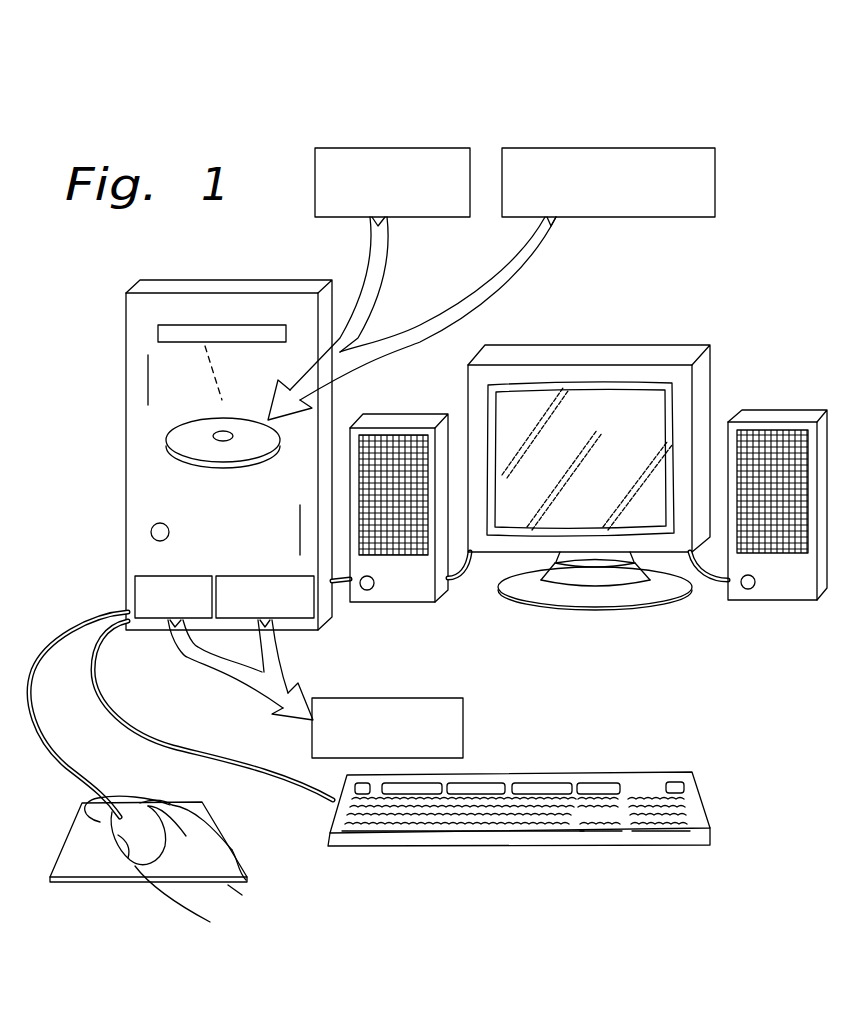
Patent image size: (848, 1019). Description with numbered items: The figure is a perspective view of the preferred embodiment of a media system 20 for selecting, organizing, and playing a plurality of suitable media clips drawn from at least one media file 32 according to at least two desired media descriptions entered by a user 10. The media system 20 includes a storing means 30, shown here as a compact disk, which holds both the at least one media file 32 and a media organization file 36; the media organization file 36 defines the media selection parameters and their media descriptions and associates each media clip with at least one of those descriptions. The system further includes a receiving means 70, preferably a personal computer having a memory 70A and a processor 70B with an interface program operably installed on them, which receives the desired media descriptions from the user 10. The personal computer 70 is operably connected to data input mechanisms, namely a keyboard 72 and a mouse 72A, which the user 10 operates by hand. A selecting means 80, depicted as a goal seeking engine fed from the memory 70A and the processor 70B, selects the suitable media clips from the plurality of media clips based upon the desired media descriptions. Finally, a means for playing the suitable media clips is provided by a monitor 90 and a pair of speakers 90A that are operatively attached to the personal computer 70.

The user 10 is at (220, 852).
The media system 20 is at (691, 84).
The storing means 30 is at (178, 437).
The media file 32 is at (387, 147).
The media organization file 36 is at (548, 147).
The receiving means 70 is at (133, 340).
The memory 70A is at (137, 592).
The processor 70B is at (256, 576).
The keyboard 72 is at (385, 815).
The mouse 72A is at (96, 805).
The selecting means 80 is at (455, 697).
The monitor 90 is at (632, 393).
The speakers 90A is at (807, 420).